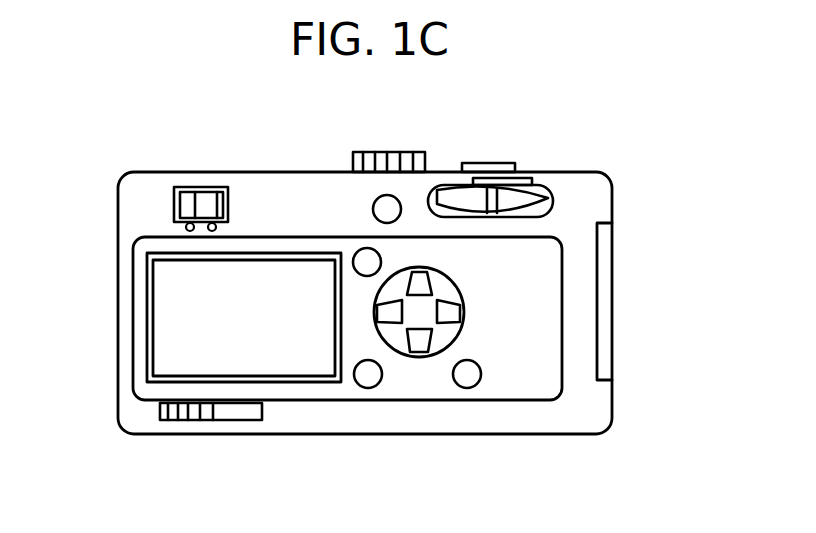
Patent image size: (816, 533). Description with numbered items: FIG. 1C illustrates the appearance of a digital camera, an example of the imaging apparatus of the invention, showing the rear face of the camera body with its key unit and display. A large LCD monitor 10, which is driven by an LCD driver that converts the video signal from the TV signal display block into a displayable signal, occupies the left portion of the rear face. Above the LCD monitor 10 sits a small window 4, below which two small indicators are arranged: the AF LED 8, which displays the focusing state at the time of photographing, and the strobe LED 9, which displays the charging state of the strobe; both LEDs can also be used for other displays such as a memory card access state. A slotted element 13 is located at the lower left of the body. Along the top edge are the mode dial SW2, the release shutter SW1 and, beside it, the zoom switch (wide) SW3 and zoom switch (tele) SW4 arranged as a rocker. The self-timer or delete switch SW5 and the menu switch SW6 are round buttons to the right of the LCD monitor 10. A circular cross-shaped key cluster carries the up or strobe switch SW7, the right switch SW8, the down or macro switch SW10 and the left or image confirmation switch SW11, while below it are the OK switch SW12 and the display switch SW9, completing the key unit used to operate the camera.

The viewfinder 4 is at (183, 207).
The AF LED 8 is at (189, 190).
The strobe LED 9 is at (210, 190).
The LCD monitor 10 is at (167, 325).
The speaker 13 is at (160, 411).
The release shutter SW1 is at (490, 163).
The mode dial SW2 is at (390, 152).
The zoom switch (wide) SW3 is at (445, 198).
The zoom switch (tele) SW4 is at (540, 200).
The self-timer or delete switch SW5 is at (382, 208).
The menu switch SW6 is at (366, 258).
The up or strobe switch SW7 is at (422, 282).
The right switch SW8 is at (453, 312).
The display switch SW9 is at (467, 374).
The down or macro switch SW10 is at (418, 350).
The left or image confirmation switch SW11 is at (378, 312).
The OK switch SW12 is at (368, 374).